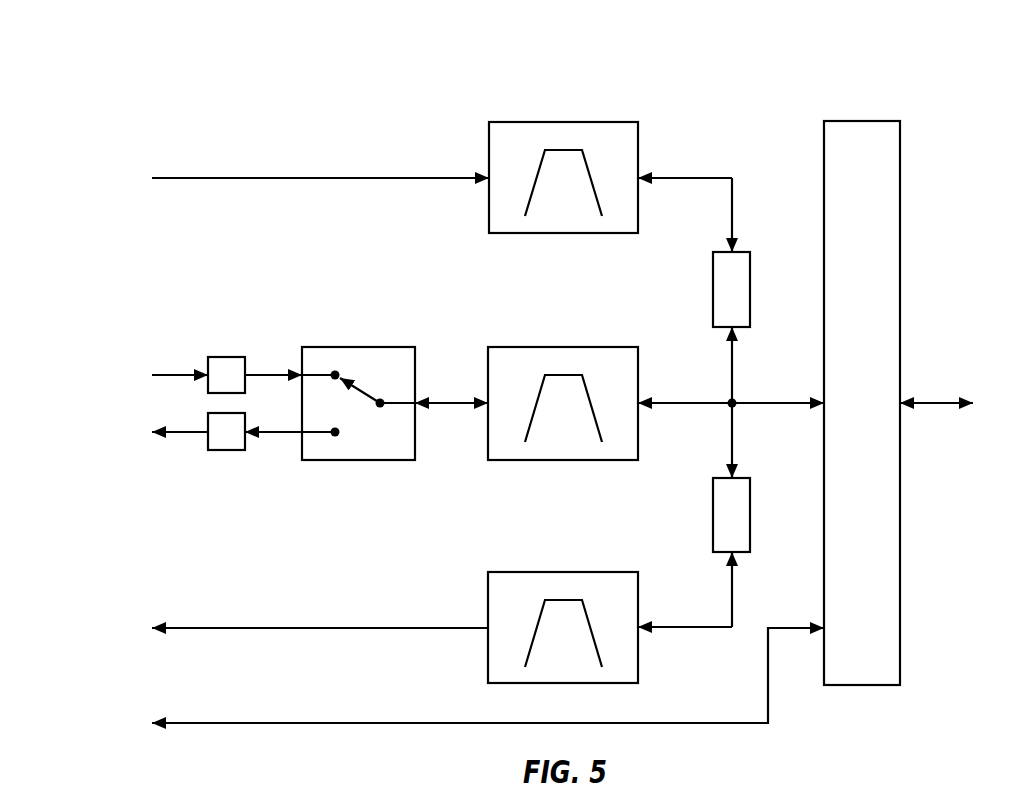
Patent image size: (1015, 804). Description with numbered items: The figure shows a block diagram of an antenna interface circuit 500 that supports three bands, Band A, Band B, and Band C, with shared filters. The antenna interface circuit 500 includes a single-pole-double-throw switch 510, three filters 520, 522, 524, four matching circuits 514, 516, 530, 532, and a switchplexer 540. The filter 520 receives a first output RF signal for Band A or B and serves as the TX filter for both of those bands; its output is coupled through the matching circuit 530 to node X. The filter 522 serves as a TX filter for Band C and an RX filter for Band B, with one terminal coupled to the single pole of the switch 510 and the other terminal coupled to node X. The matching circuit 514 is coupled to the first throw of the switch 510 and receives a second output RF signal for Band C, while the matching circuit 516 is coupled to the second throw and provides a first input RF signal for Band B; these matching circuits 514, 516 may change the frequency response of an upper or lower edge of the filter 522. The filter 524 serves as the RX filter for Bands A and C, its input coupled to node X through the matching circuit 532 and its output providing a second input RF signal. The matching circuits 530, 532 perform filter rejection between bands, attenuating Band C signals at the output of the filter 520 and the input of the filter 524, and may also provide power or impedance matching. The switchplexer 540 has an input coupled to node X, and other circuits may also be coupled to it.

The antenna interface circuit 500 is at (937, 83).
The single-pole-double-throw (SPDT) switch 510 is at (356, 347).
The matching circuit 514 is at (246, 388).
The matching circuit 516 is at (208, 420).
The filter 520 is at (639, 155).
The filter 522 is at (639, 422).
The filter 524 is at (639, 605).
The matching circuit 530 is at (751, 290).
The matching circuit 532 is at (751, 512).
The switchplexer 540 is at (856, 121).